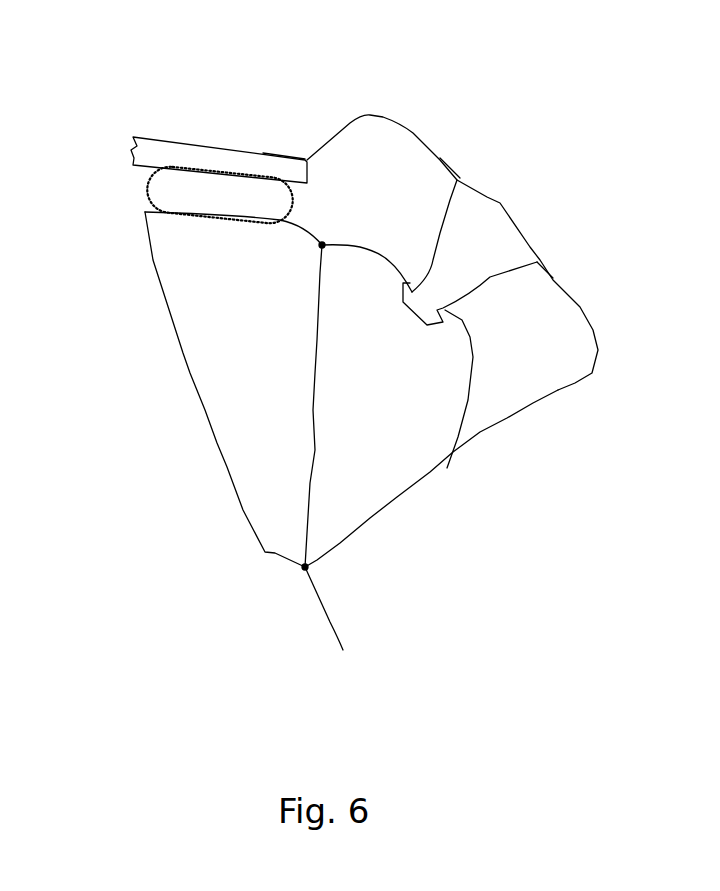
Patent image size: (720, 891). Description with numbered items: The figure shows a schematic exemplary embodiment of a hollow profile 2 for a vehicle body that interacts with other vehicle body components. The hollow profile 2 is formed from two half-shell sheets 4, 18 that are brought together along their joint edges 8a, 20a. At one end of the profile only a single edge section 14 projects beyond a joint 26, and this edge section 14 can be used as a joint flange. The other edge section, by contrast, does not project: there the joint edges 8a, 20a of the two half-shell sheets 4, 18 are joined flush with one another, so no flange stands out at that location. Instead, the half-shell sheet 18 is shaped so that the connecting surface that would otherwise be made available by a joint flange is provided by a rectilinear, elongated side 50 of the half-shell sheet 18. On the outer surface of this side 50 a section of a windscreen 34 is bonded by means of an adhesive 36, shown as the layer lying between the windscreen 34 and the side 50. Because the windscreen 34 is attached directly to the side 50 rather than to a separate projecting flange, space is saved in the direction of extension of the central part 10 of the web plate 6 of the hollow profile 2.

The hollow profile 2 is at (565, 133).
The half-shell sheet 4 is at (397, 498).
The web plate 6 is at (315, 458).
The joint edge 8a is at (322, 245).
The central part 10 is at (318, 385).
The edge section 14 is at (330, 622).
The half-shell sheet 18 is at (217, 443).
The joint edge 20a is at (322, 245).
The joint 26 is at (300, 573).
The windscreen 34 is at (163, 150).
The adhesive 36 is at (257, 204).
The rectilinear, elongated side 50 is at (160, 208).